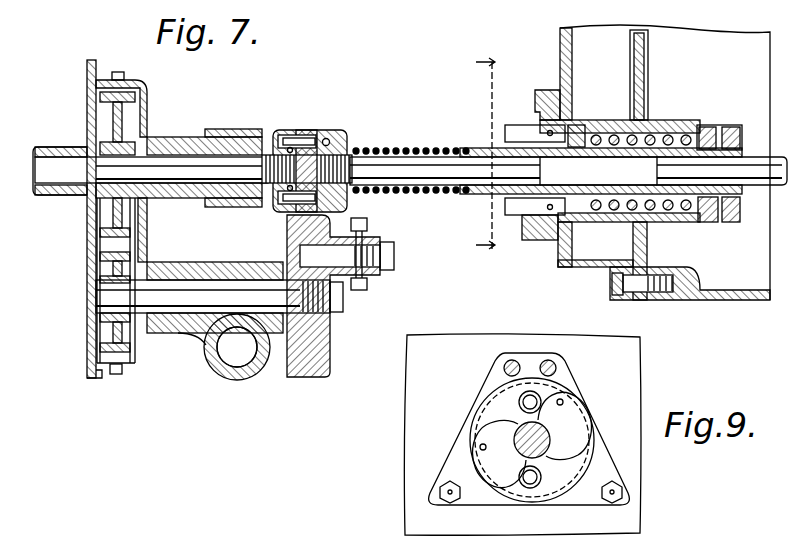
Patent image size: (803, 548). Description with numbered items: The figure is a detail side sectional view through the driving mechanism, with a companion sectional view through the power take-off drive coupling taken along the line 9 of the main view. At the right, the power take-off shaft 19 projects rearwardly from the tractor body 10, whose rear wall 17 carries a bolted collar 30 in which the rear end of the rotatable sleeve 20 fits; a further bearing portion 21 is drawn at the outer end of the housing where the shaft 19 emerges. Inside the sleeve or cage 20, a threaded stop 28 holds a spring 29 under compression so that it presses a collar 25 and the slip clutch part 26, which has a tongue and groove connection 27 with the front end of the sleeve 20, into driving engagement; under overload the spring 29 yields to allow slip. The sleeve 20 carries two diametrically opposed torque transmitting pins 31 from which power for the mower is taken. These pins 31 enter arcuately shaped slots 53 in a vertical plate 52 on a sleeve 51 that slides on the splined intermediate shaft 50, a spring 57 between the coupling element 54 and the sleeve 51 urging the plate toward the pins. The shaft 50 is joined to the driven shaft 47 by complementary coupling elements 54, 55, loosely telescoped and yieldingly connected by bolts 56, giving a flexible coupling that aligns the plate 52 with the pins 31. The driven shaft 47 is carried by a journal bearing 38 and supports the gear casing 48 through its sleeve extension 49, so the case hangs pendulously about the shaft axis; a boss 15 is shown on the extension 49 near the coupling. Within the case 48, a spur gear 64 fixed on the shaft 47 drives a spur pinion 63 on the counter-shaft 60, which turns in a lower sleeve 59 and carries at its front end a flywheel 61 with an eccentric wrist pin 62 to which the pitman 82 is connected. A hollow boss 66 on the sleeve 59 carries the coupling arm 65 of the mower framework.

In FIG. 7, the section line 9— 9 is at (477, 153).
In FIG. 7, the body 10 is at (757, 300).
In FIG. 7, the boss 15 is at (243, 208).
In FIG. 7, the rear wall 17 is at (560, 47).
In FIG. 7, the power take-off shaft 19 is at (768, 192).
In FIG. 7, the sleeve 20 is at (612, 120).
In FIG. 7, the bearing 21 is at (725, 126).
In FIG. 7, the collar 25 is at (740, 223).
In FIG. 7, the slip clutch part 26 is at (707, 223).
In FIG. 7, the tongue and groove connection 27 is at (680, 236).
In FIG. 7, the stop 28 is at (587, 126).
In FIG. 7, the spring 29 is at (613, 222).
In FIG. 7, the collar 30 is at (546, 240).
In FIG. 9, the collar 30 is at (596, 402).
In FIG. 7, the torque transmitting pins 31 is at (520, 127).
In FIG. 7, the journal bearing 38 is at (58, 196).
In FIG. 7, the driven shaft 47 is at (162, 160).
In FIG. 7, the gear casing 48 is at (140, 372).
In FIG. 7, the sleeve extension 49 is at (178, 199).
In FIG. 7, the intermediate shaft 50 is at (412, 168).
In FIG. 9, the intermediate shaft 50 is at (520, 426).
In FIG. 7, the sleeve 51 is at (470, 194).
In FIG. 9, the sleeve 51 is at (540, 394).
In FIG. 7, the vertical plate 52 is at (538, 108).
In FIG. 9, the vertical plate 52 is at (490, 410).
In FIG. 9, the arcuately shaped slots 53 is at (565, 402).
In FIG. 7, the coupling element 54 is at (347, 137).
In FIG. 7, the coupling element 55 is at (290, 137).
In FIG. 7, the bolts 56 is at (328, 138).
In FIG. 7, the spring 57 is at (291, 147).
In FIG. 7, the sleeve 59 is at (182, 334).
In FIG. 7, the counter-shaft 60 is at (190, 296).
In FIG. 7, the flywheel 61 is at (325, 338).
In FIG. 7, the wrist pin 62 is at (384, 262).
In FIG. 7, the spur pinion 63 is at (105, 350).
In FIG. 7, the spur gear 64 is at (125, 98).
In FIG. 7, the coupling arm 65 is at (260, 362).
In FIG. 7, the hollow boss 66 is at (224, 378).
In FIG. 7, the pitman 82 is at (362, 292).